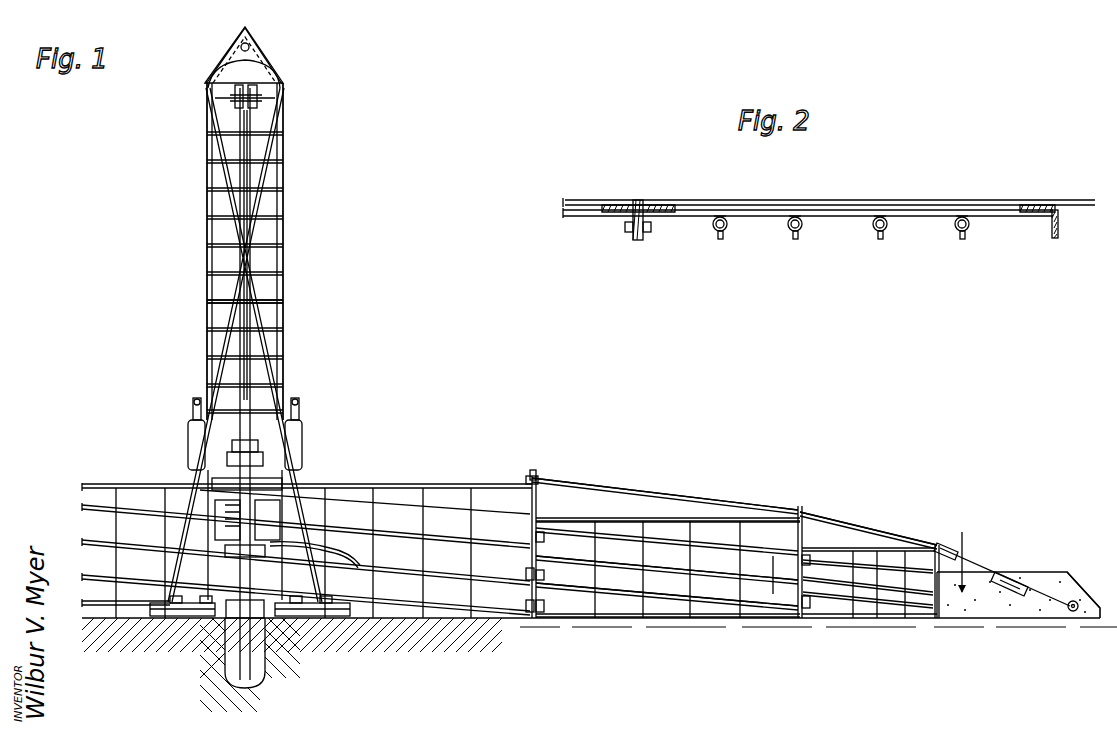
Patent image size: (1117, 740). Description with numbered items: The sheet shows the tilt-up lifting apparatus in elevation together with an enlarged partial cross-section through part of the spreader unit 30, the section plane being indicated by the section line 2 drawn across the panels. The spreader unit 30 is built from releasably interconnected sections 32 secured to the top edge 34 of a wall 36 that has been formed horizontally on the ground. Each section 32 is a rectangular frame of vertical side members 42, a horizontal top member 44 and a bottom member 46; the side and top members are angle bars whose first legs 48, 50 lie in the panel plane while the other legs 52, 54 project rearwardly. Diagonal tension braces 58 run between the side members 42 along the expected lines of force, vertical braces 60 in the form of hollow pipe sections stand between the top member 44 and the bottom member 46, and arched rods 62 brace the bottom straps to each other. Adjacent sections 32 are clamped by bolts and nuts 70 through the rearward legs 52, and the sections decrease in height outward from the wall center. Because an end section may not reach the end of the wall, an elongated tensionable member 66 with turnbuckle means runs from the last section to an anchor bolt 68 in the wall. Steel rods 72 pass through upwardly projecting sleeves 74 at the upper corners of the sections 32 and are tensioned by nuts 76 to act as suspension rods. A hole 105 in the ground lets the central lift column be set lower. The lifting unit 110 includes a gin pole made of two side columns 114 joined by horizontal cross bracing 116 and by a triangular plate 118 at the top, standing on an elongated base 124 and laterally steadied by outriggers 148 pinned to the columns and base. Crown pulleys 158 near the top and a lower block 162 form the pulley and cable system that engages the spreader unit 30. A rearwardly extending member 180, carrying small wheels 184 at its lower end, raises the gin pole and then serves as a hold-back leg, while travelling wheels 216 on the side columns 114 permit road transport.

In FIG. 1, the section line 2- 2 is at (867, 563).
In FIG. 1, the spreader unit 30 is at (595, 460).
In FIG. 1, the sections 32 is at (432, 474).
In FIG. 1, the top edge 34 is at (1048, 573).
In FIG. 1, the wall 36 is at (975, 620).
In FIG. 1, the vertical side members 42 is at (546, 538).
In FIG. 1, the horizontal top member 44 is at (670, 512).
In FIG. 1, the bottom member 46 is at (660, 620).
In FIG. 1, the first leg 48 is at (546, 576).
In FIG. 2, the first leg 48 is at (645, 188).
In FIG. 1, the first leg 50 is at (720, 524).
In FIG. 1, the other leg 52 is at (548, 618).
In FIG. 2, the other leg 52 is at (633, 236).
In FIG. 1, the other leg 54 is at (607, 518).
In FIG. 1, the diagonal tension accommodating braces 58 is at (690, 535).
In FIG. 2, the diagonal tension accommodating braces 58 is at (822, 218).
In FIG. 1, the vertical braces 60 is at (645, 597).
In FIG. 2, the vertical braces 60 is at (882, 236).
In FIG. 2, the arched rods 62 is at (722, 238).
In FIG. 1, the elongated tensionable member 66 is at (990, 568).
In FIG. 1, the anchor bolt 68 is at (1070, 611).
In FIG. 1, the bolts and nuts 70 is at (810, 616).
In FIG. 2, the bolts and nuts 70 is at (651, 233).
In FIG. 1, the tension accommodating steel rods 72 is at (622, 488).
In FIG. 1, the ears or sleeves 74 is at (536, 478).
In FIG. 1, the tensioning nuts 76 is at (528, 479).
In FIG. 1, the hole 105 is at (265, 632).
In FIG. 1, the lifting unit 110 is at (300, 240).
In FIG. 1, the side columns or legs 114 is at (283, 180).
In FIG. 1, the horizontal cross bracing 116 is at (267, 303).
In FIG. 1, the triangular rigid plate 118 is at (265, 66).
In FIG. 1, the base 124 is at (180, 623).
In FIG. 1, the side braces or outriggers 148 is at (313, 497).
In FIG. 1, the crown pulleys 158 is at (257, 104).
In FIG. 1, the lower block 162 is at (263, 456).
In FIG. 1, the rearwardly extending member 180 is at (253, 493).
In FIG. 1, the wheels 184 is at (238, 624).
In FIG. 1, the travelling wheels 216 is at (297, 427).